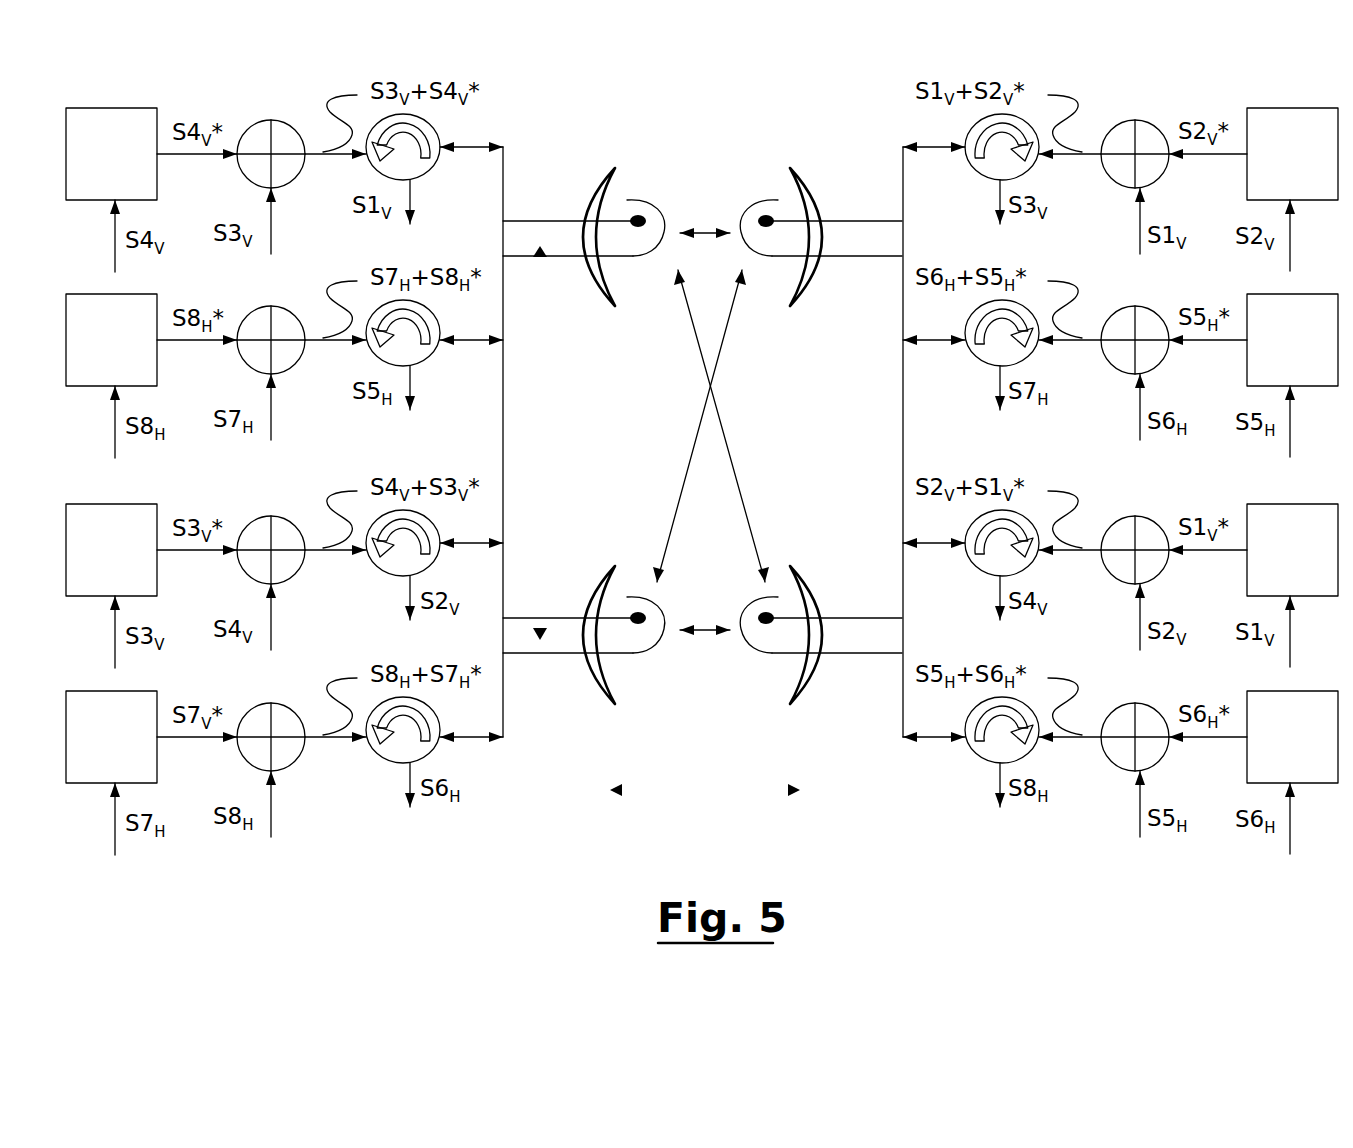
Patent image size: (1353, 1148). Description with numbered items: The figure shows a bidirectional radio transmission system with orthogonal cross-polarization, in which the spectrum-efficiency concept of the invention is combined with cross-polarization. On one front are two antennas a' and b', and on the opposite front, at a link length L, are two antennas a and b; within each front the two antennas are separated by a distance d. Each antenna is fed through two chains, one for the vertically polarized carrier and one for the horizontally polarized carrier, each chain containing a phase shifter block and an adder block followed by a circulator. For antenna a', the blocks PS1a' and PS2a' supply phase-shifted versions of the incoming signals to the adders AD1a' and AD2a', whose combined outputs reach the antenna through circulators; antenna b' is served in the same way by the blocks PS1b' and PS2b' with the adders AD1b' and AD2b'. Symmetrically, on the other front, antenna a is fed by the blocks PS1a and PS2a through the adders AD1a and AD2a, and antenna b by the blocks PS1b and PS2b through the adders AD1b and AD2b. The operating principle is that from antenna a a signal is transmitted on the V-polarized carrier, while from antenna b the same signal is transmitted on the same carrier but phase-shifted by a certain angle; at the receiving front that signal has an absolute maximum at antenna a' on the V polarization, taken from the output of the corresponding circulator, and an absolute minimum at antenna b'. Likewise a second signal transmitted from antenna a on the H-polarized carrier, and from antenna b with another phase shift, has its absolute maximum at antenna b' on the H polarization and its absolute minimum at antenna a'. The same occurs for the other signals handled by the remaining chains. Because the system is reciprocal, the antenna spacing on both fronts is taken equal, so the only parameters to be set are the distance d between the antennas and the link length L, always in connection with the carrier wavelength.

The first polarization shifter of station a' PS1a' is at (111, 154).
The second polarization shifter of station a' PS2a' is at (111, 340).
The first adder of station a' AD1a' is at (299, 193).
The second adder of station a' AD2a' is at (299, 379).
The first polarization shifter of station b' PS1b' is at (111, 550).
The second polarization shifter of station b' PS2b' is at (111, 737).
The first adder of station b' AD1b' is at (299, 589).
The second adder of station b' AD2b' is at (299, 776).
The first polarization shifter of station a PS1a is at (1292, 154).
The second polarization shifter of station a PS2a is at (1292, 340).
The first adder of station a AD1a is at (1101, 192).
The second adder of station a AD2a is at (1101, 378).
The first polarization shifter of station b PS1b is at (1292, 550).
The second polarization shifter of station b PS2b is at (1292, 737).
The first adder of station b AD1b is at (1101, 588).
The second adder of station b AD2b is at (1101, 775).
The receiving antenna a' is at (584, 237).
The transmitting antenna a is at (821, 237).
The receiving antenna b' is at (584, 635).
The transmitting antenna b is at (821, 635).
The distance between the antennas d is at (569, 430).
The link length L is at (705, 776).